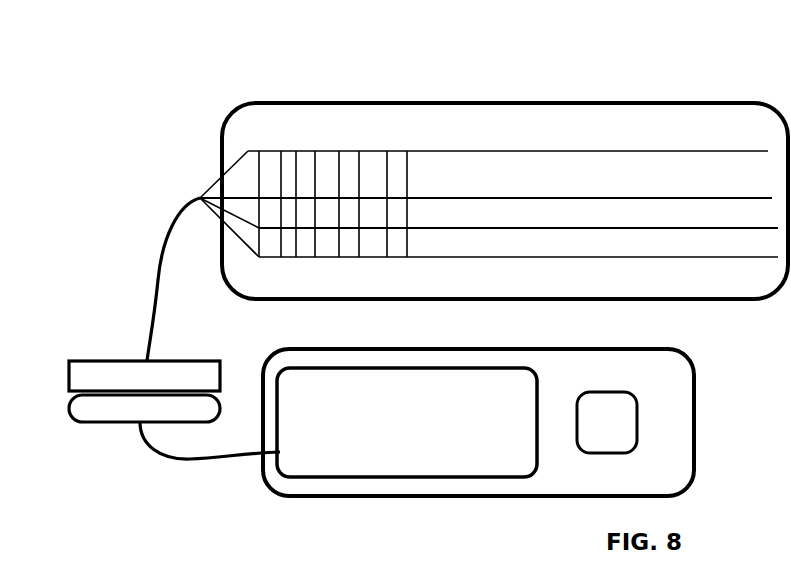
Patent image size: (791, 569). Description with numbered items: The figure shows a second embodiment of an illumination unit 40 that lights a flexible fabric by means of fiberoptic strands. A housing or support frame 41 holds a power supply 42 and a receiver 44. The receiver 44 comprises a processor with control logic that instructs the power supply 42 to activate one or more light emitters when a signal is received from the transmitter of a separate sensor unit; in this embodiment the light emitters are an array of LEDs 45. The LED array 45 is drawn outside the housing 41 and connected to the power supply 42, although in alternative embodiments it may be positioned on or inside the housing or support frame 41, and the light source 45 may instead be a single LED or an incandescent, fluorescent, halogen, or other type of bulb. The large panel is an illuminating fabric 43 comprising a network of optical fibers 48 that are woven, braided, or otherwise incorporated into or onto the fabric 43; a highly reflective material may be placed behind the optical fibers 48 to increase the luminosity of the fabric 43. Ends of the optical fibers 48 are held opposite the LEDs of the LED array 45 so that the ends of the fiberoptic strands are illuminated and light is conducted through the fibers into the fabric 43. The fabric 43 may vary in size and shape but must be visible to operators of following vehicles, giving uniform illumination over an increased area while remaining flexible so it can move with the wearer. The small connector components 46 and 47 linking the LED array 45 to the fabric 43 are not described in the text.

The illumination unit 40 is at (103, 242).
The housing or support frame 41 is at (693, 364).
The power supply 42 is at (293, 461).
The illuminating fabric 43 is at (583, 100).
The receiver 44 is at (610, 425).
The LED array 45 is at (110, 412).
The connector housing 46 is at (120, 365).
The cable 47 is at (173, 228).
The optical fibers 48 is at (242, 155).